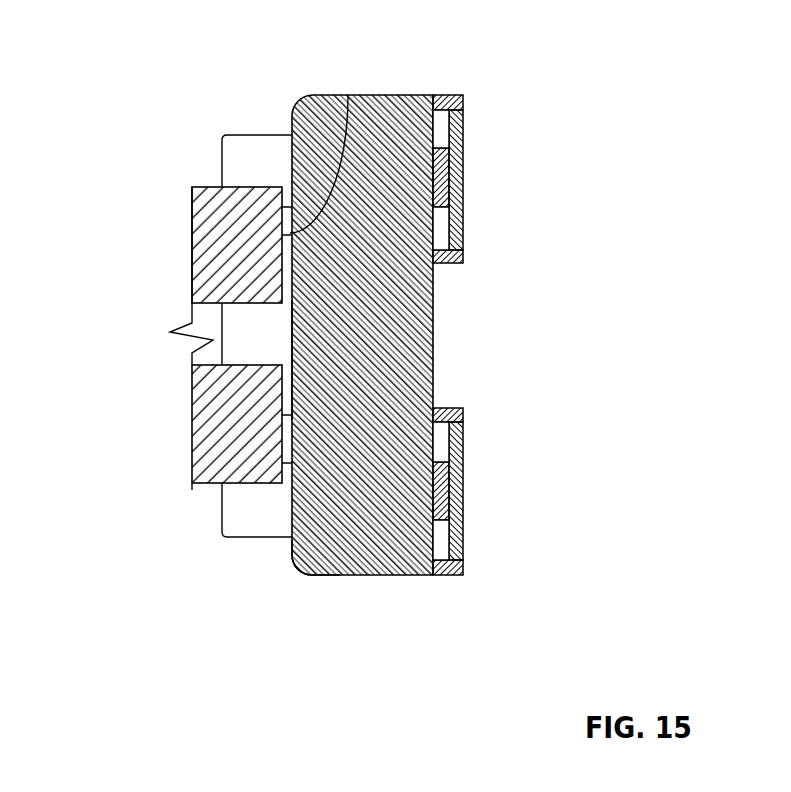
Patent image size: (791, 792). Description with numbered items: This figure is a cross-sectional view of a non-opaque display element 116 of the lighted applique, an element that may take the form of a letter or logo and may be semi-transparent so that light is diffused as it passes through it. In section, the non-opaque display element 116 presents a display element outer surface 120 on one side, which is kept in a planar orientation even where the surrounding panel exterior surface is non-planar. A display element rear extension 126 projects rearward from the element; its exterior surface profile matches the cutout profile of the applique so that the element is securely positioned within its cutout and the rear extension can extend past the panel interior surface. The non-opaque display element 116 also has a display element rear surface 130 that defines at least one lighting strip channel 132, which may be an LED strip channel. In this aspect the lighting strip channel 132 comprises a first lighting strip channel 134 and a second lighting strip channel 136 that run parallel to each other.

The non-opaque display element 116 is at (138, 64).
The display element outer surface 120 is at (486, 178).
The display element rear extension 126 is at (370, 532).
The display element rear surface 130 is at (312, 545).
The lighting strip channel 132 is at (274, 277).
The first lighting strip channel 134 is at (282, 415).
The second lighting strip channel 136 is at (348, 95).